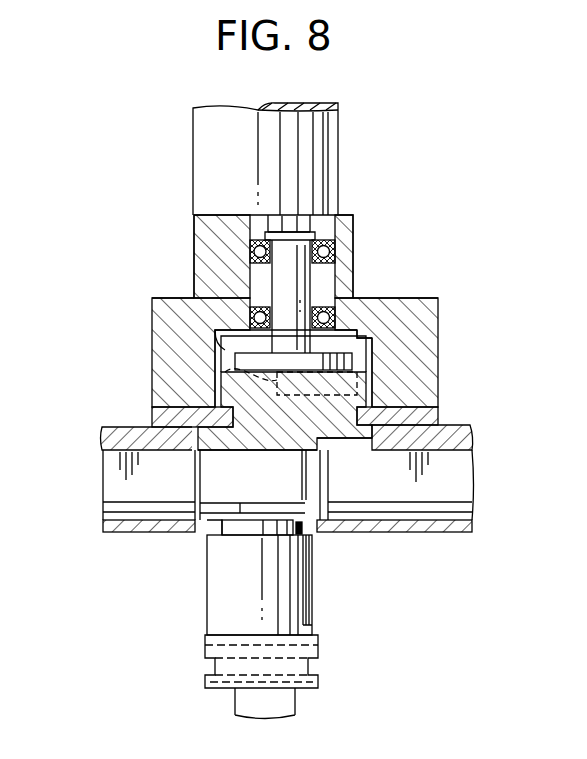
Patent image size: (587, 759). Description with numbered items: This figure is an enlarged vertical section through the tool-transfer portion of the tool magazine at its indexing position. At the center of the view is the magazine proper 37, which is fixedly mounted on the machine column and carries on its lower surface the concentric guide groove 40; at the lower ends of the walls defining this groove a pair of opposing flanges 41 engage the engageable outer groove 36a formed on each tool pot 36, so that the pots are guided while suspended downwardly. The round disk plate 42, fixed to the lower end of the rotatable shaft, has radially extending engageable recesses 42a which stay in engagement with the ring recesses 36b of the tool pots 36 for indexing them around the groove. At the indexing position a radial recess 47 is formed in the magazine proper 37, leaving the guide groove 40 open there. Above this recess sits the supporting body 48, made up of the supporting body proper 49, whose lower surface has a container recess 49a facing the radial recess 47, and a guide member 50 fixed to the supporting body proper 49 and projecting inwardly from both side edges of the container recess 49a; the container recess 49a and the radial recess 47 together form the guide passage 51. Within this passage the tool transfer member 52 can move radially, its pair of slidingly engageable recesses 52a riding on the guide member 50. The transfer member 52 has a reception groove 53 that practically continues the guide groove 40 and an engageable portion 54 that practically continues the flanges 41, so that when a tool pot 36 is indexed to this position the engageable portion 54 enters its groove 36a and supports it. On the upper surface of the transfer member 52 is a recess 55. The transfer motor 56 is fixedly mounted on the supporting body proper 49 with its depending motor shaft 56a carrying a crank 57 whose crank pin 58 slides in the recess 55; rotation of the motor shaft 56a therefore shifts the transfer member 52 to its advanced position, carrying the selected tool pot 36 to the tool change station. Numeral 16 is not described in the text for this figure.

The spindle 16 is at (210, 652).
The tool pot 36 is at (210, 625).
The engageable outer groove 36a is at (245, 545).
The ring recess 36b is at (238, 537).
The magazine proper 37 is at (100, 428).
The guide groove 40 is at (460, 462).
The opposing flanges 41 is at (460, 508).
The round disk plate 42 is at (410, 527).
The engageable recesses 42a is at (313, 562).
The radial recess 47 is at (195, 490).
The supporting body 48 is at (357, 257).
The supporting body proper 49 is at (410, 305).
The container recess 49a is at (358, 330).
The guide member 50 is at (152, 413).
The guide passage 51 is at (215, 348).
The tool transfer member 52 is at (225, 400).
The slidingly engageable recesses 52a is at (395, 430).
The reception groove 53 is at (225, 455).
The engageable portion 54 is at (200, 528).
The recess 55 is at (360, 380).
The transfer motor 56 is at (330, 162).
The motor shaft 56a is at (277, 270).
The crank 57 is at (222, 320).
The crank pin 58 is at (225, 372).